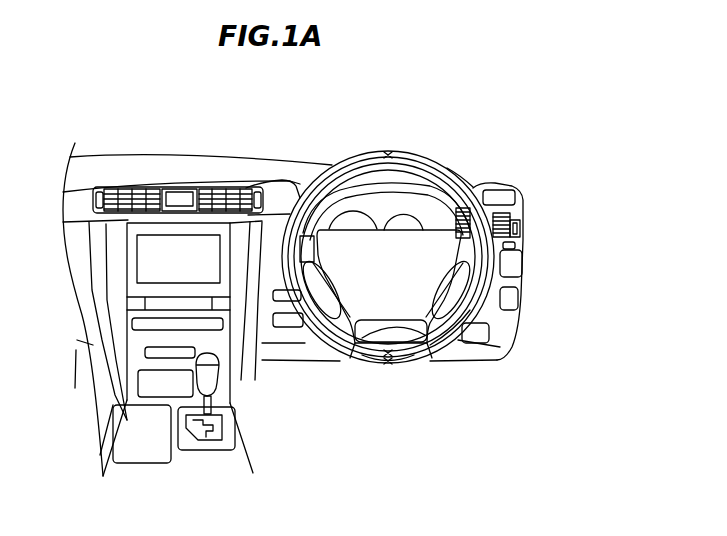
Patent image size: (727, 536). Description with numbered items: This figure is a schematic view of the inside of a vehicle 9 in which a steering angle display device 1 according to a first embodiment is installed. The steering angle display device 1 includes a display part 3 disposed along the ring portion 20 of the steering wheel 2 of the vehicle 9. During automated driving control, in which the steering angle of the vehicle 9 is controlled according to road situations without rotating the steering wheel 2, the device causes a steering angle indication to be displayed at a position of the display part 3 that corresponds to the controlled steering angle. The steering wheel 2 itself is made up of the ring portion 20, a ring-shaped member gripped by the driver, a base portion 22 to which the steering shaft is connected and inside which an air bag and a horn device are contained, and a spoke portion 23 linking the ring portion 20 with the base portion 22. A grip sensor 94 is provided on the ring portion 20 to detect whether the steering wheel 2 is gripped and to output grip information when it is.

The vehicle 9 is at (553, 81).
The steering angle display device 1 is at (449, 148).
The display part 3 is at (483, 197).
The steering wheel 2 is at (510, 245).
The ring portion 20 is at (502, 270).
The base portion 22 is at (437, 283).
The spoke portion 23 is at (408, 362).
The grip sensor 94 is at (443, 350).